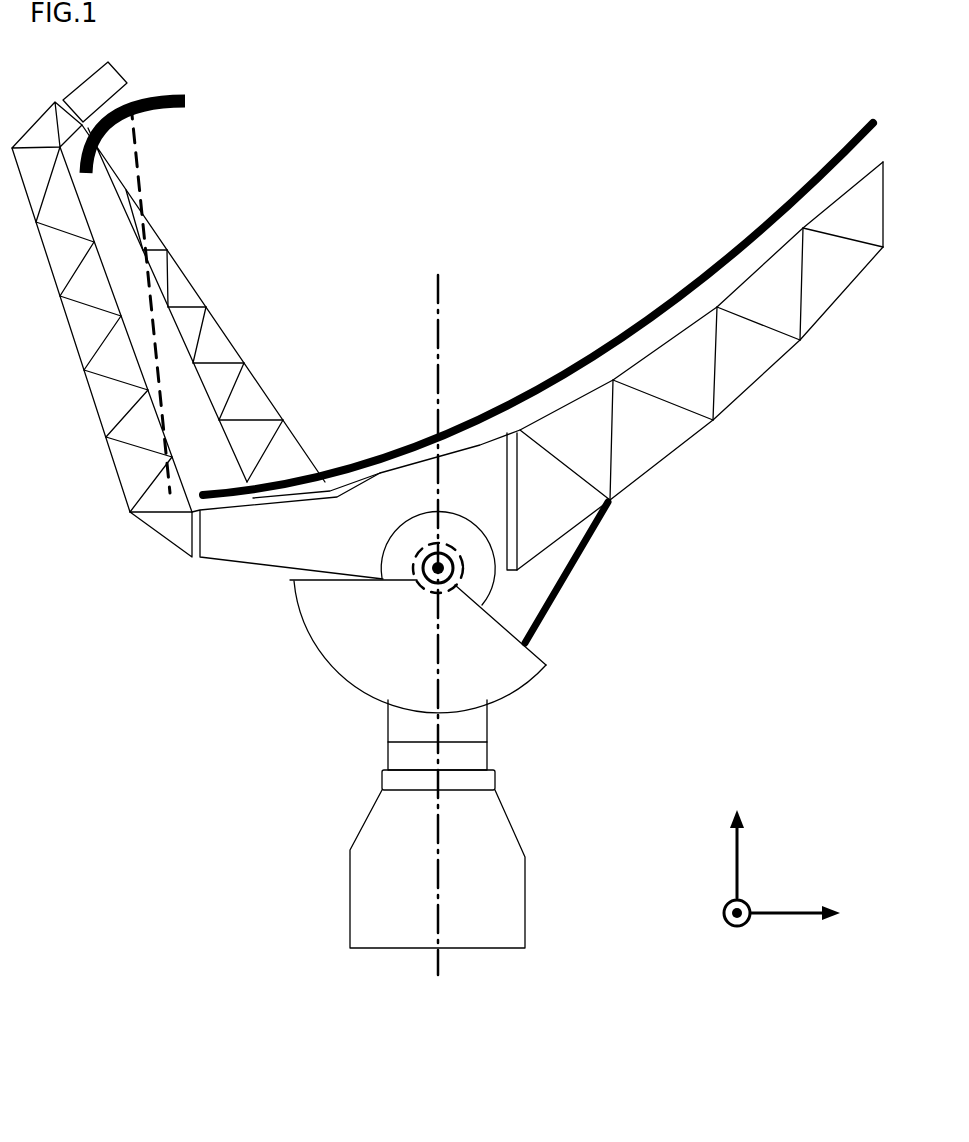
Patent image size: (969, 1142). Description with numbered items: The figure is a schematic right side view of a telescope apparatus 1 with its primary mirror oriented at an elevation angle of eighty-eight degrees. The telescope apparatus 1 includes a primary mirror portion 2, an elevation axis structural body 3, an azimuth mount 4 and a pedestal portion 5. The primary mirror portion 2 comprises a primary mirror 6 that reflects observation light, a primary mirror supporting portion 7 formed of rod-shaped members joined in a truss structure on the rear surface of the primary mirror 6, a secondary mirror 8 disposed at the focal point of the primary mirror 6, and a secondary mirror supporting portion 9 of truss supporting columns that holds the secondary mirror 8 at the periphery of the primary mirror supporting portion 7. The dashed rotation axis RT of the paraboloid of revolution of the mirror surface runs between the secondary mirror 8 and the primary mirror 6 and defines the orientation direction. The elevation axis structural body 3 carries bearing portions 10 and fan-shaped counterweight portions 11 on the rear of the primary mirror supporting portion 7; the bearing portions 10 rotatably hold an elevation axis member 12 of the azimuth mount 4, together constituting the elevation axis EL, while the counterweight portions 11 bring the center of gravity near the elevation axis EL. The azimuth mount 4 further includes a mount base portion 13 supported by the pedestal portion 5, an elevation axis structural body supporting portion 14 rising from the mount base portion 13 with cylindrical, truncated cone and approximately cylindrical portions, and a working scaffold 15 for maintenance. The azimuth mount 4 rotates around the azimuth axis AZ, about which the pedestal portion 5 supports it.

The telescope apparatus 1 is at (331, 132).
The primary mirror portion 2 is at (655, 136).
The elevation axis structural body 3 is at (655, 603).
The azimuth mount 4 is at (632, 703).
The pedestal portion 5 is at (475, 830).
The primary mirror 6 is at (660, 303).
The primary mirror supporting portion 7 is at (733, 292).
The secondary mirror 8 is at (100, 140).
The secondary mirror supporting portion 9 is at (263, 387).
The bearing portion 10 is at (480, 578).
The counterweight portion 11 is at (487, 677).
The elevation axis member 12 is at (472, 558).
The mount base portion 13 is at (470, 752).
The elevation axis structural body supporting portion 14 is at (468, 722).
The working scaffold 15 is at (472, 779).
The rotation axis RT is at (140, 188).
The azimuth axis AZ is at (438, 320).
The elevation axis EL is at (447, 583).